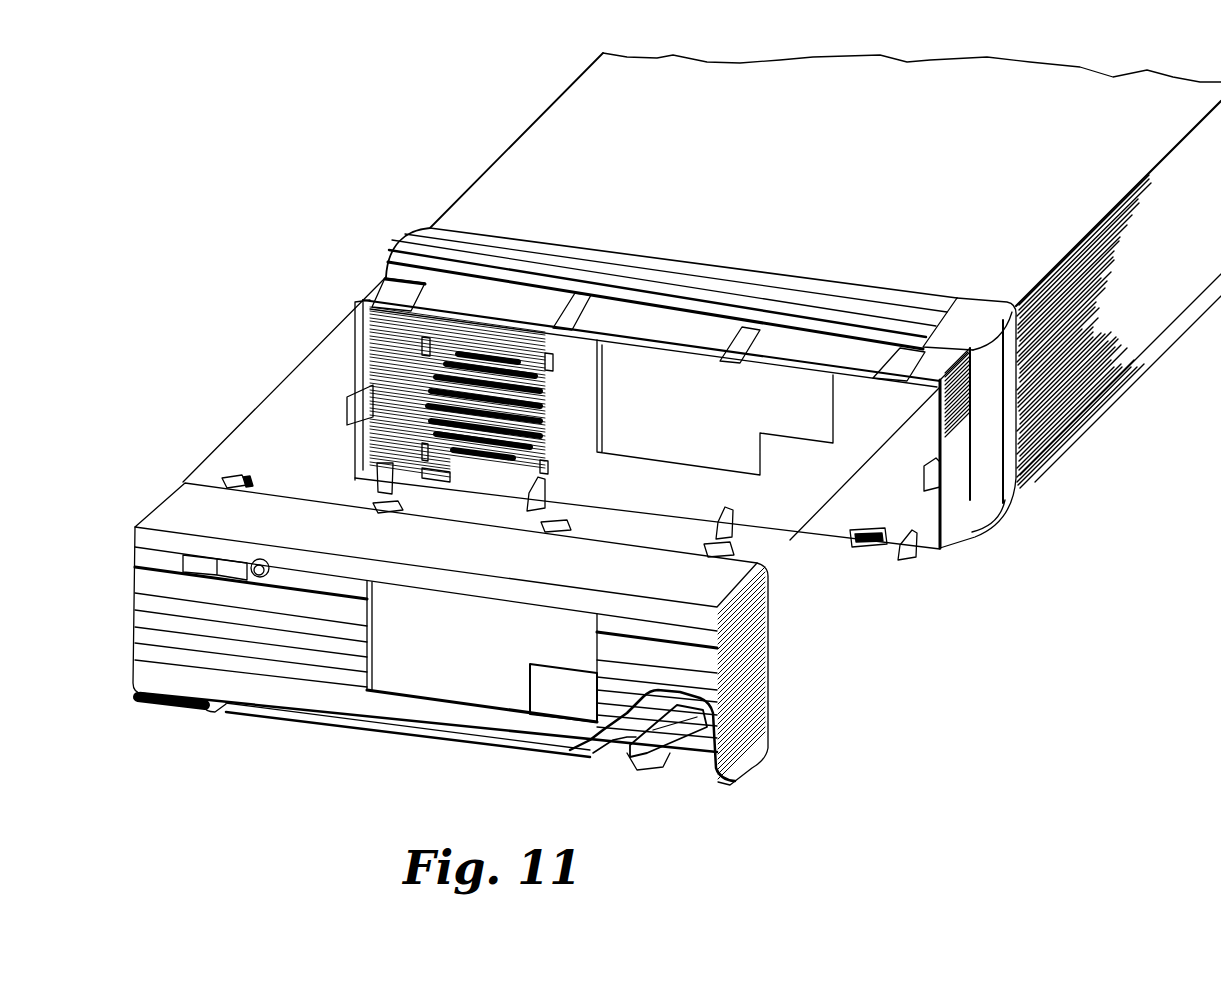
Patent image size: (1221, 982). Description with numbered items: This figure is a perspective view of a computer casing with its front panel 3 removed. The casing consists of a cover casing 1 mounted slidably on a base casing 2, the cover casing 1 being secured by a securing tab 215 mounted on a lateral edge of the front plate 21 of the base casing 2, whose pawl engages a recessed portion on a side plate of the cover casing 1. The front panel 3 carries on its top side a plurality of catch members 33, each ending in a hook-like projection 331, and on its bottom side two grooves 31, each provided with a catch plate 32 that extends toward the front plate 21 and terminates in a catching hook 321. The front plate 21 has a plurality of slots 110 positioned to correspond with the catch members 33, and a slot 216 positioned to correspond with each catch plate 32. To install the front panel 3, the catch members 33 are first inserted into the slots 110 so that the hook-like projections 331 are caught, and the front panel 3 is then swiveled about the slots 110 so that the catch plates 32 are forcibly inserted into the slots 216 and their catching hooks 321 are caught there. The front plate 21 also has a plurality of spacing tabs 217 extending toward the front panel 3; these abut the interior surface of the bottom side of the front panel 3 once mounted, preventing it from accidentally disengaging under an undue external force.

The cover casing 1 is at (494, 159).
The slots 110 is at (383, 272).
The base casing 2 is at (1052, 469).
The front plate 21 is at (840, 500).
The securing tab 215 is at (343, 410).
The slot 216 is at (860, 548).
The spacing tabs 217 is at (363, 476).
The front panel 3 is at (323, 697).
The grooves 31 is at (216, 713).
The catch plate 32 is at (627, 742).
The catching hook 321 is at (707, 723).
The catch members 33 is at (222, 478).
The hook-like projection 331 is at (245, 477).